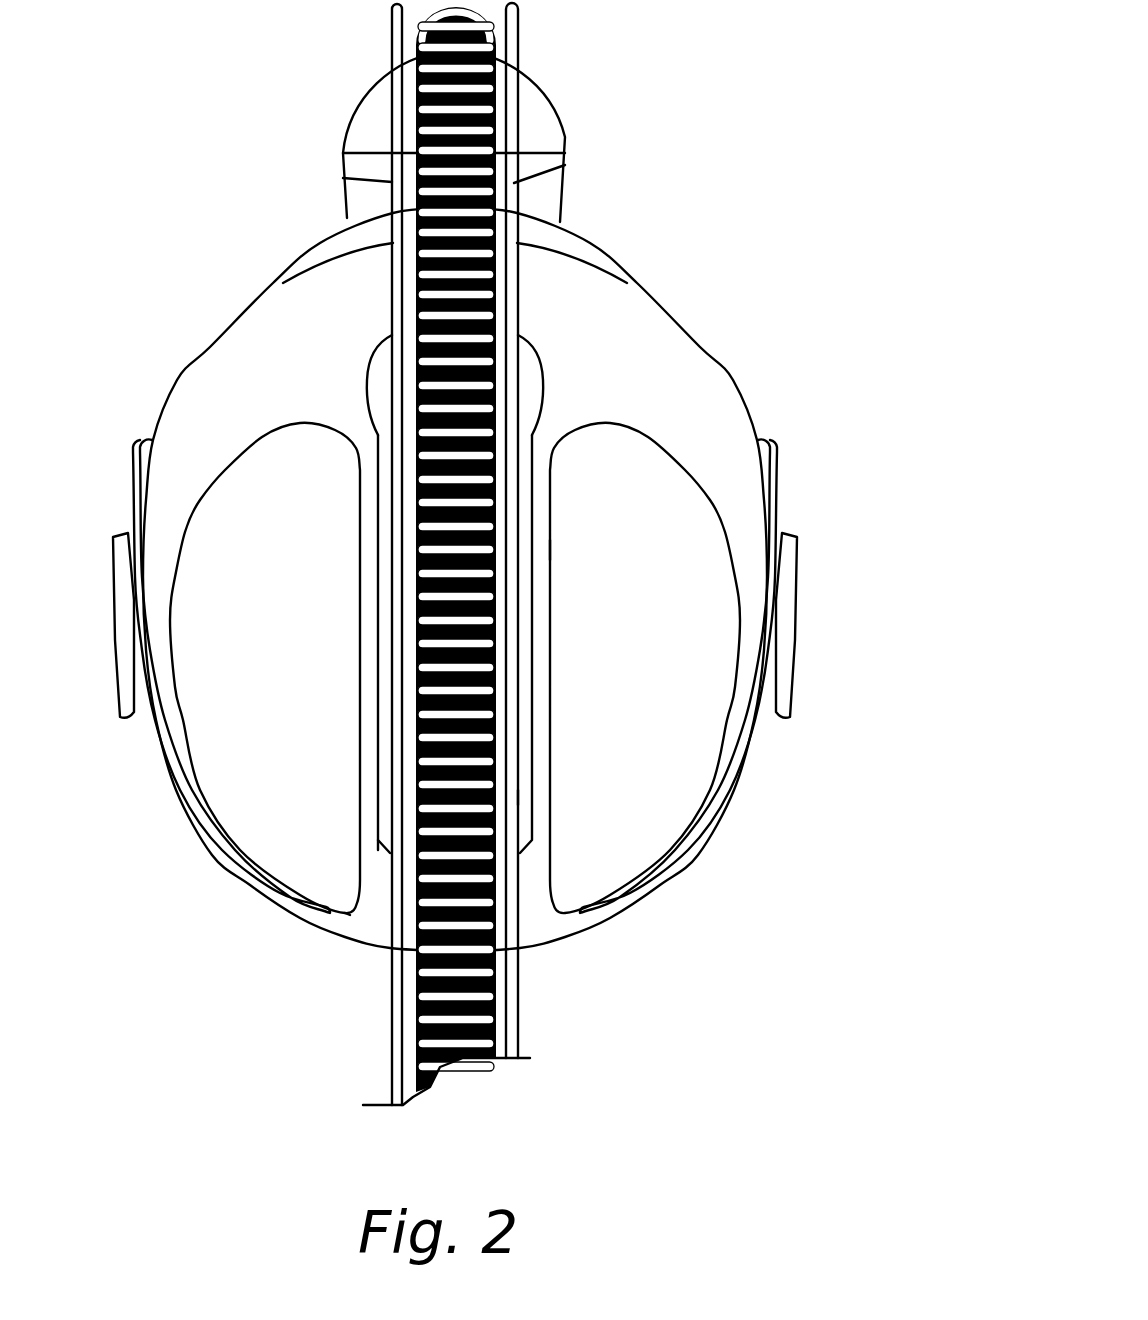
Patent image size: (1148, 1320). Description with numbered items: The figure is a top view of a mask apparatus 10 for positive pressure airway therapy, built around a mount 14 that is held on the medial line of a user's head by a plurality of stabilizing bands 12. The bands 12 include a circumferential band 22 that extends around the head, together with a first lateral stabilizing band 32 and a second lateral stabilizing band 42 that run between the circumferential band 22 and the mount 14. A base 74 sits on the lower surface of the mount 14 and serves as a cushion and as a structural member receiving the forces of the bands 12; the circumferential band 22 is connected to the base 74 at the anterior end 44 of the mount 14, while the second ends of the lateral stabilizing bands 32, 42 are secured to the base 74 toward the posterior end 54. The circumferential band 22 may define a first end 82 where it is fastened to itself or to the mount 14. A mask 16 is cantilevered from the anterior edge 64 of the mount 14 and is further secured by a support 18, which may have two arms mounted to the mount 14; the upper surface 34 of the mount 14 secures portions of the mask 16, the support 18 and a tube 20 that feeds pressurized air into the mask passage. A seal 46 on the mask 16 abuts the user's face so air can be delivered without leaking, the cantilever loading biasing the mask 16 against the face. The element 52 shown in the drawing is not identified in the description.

The mask apparatus 10 is at (515, 526).
The stabilizing bands 12 is at (373, 653).
The mount 14 is at (535, 390).
The mask 16 is at (362, 100).
The support 18 is at (568, 163).
The tube 20 is at (497, 556).
The circumferential band 22 is at (225, 360).
The first lateral stabilizing band 32 is at (360, 917).
The upper surface 34 is at (547, 477).
The second lateral stabilizing band 42 is at (540, 927).
The anterior end 44 is at (537, 350).
The seal 46 is at (560, 222).
The spring clip 52 is at (548, 650).
The posterior end 54 is at (520, 797).
The anterior edge 64 is at (388, 338).
The base 74 is at (548, 550).
The first end 82 is at (373, 892).